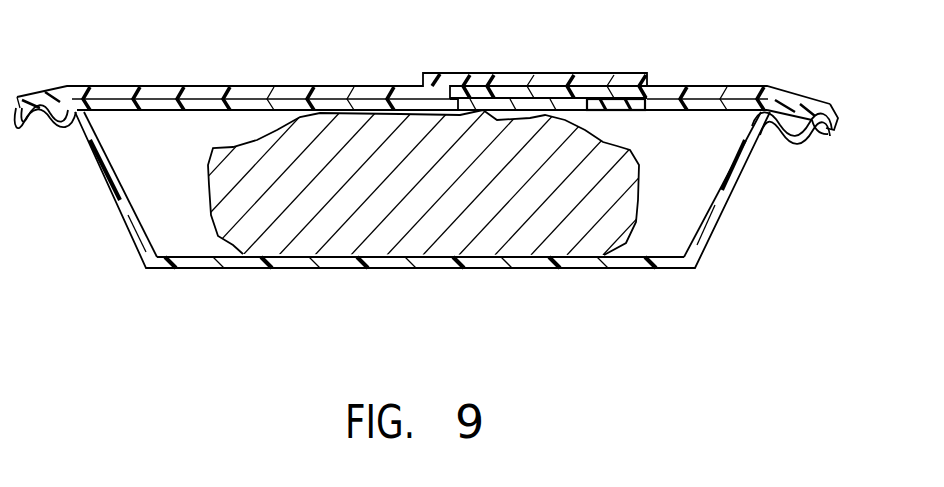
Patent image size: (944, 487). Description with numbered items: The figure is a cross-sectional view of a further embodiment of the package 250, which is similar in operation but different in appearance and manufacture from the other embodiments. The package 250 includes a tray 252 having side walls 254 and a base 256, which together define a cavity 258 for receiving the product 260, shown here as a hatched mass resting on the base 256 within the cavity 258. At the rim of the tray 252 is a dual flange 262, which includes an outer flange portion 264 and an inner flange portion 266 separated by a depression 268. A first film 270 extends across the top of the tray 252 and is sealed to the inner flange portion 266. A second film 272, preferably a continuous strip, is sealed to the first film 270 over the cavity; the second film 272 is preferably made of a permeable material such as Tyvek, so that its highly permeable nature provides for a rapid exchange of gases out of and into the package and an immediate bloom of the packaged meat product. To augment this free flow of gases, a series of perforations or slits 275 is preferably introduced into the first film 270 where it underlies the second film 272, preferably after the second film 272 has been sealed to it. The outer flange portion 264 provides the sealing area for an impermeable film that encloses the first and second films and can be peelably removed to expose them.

The package 250 is at (478, 219).
The tray 252 is at (708, 243).
The side walls 254 is at (748, 160).
The base 256 is at (518, 262).
The cavity 258 is at (140, 222).
The product 260 is at (445, 205).
The dual flange 262 is at (840, 120).
The outer flange portion 264 is at (827, 143).
The inner flange portion 266 is at (77, 123).
The depression 268 is at (793, 110).
The first film 270 is at (278, 107).
The second film 272 is at (473, 92).
The perforations or slits 275 is at (574, 114).